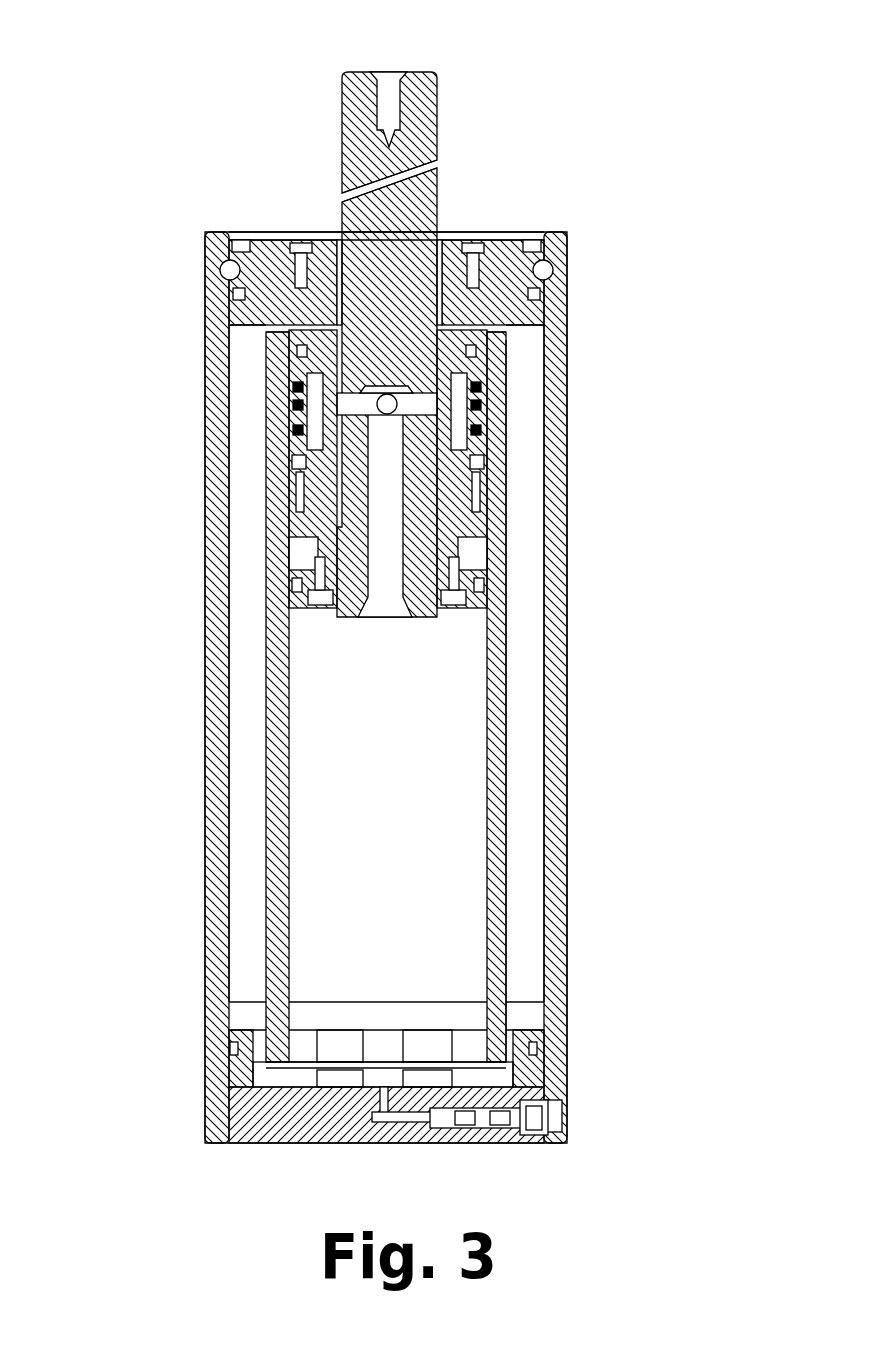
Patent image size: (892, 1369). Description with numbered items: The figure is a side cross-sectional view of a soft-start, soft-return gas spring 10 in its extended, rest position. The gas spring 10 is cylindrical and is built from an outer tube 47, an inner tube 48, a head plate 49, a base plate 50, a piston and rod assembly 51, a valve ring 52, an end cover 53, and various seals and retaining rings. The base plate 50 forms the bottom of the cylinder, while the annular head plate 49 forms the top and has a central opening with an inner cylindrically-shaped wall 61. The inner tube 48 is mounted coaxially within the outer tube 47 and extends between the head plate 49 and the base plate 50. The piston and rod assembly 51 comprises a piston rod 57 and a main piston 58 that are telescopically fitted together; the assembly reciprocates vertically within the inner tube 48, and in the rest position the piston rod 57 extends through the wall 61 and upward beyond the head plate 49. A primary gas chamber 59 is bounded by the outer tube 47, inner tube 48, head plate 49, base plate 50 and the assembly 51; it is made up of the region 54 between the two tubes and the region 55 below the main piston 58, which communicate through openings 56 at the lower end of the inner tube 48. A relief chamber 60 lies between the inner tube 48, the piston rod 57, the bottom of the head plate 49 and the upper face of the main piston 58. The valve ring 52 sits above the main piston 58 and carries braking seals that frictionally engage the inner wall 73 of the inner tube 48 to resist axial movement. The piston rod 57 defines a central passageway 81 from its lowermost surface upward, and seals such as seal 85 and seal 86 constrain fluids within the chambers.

The gas spring 10 is at (208, 128).
The outer tube 47 is at (566, 492).
The inner tube 48 is at (505, 718).
The head plate 49 is at (512, 332).
The base plate 50 is at (512, 1147).
The piston and rod assembly 51 is at (441, 184).
The valve ring 52 is at (480, 390).
The end cover 53 is at (520, 236).
The region between tubes 54 is at (523, 812).
The region below piston 55 is at (440, 885).
The openings 56 is at (262, 1075).
The piston rod 57 is at (432, 212).
The main piston 58 is at (303, 612).
The primary gas chamber 59 is at (520, 623).
The relief chamber 60 is at (300, 396).
The inner cylindrically-shaped wall 61 is at (371, 292).
The inner wall 73 is at (310, 766).
The central passageway 81 is at (382, 585).
The seal 85 is at (540, 1042).
The seal 86 is at (535, 298).